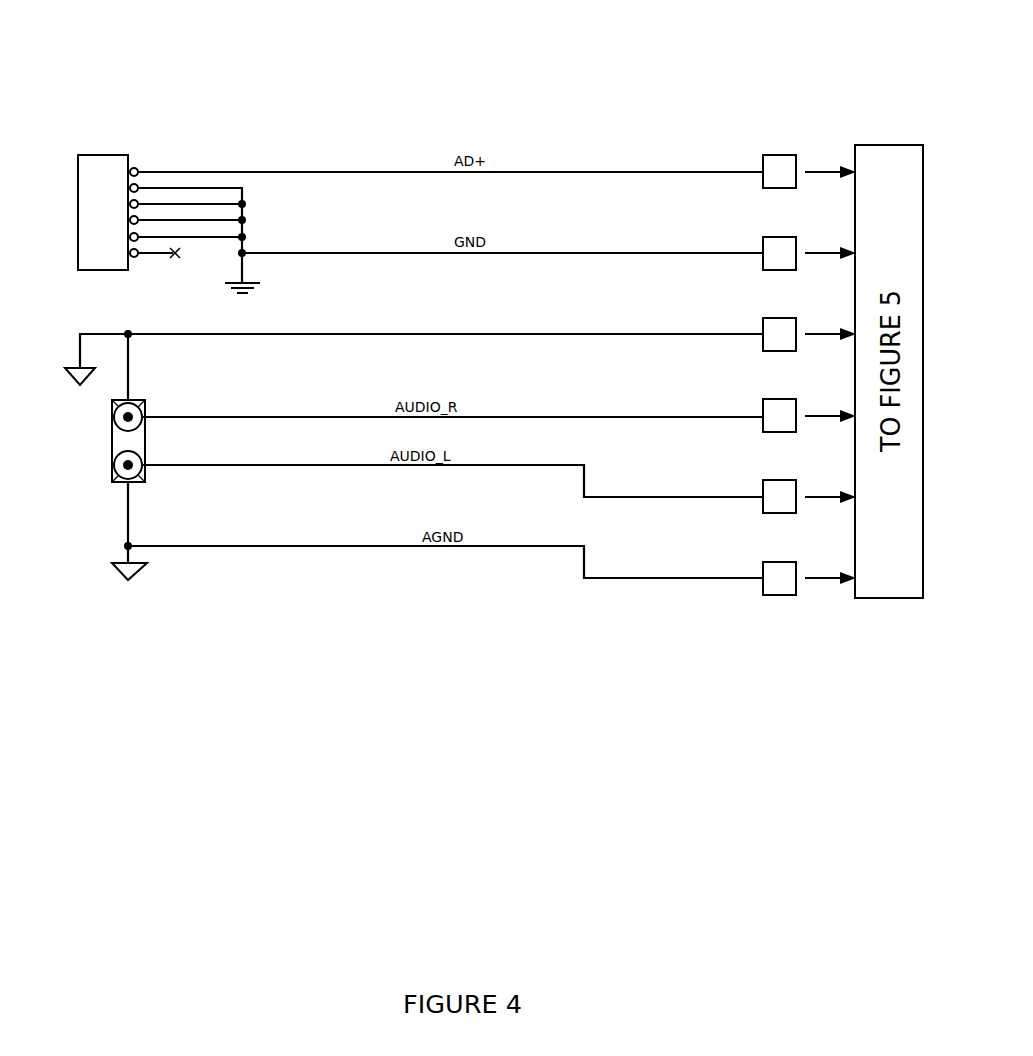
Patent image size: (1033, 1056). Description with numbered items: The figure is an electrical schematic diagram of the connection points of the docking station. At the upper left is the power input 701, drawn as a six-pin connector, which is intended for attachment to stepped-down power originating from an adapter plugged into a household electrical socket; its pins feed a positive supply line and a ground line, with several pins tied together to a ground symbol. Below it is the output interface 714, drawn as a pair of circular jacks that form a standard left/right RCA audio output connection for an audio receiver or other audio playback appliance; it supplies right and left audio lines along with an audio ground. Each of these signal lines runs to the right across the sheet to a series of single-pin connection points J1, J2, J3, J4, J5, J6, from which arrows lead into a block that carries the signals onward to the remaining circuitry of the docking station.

The power input 701 is at (78, 195).
The output interface 714 is at (103, 478).
The connector J1 is at (809, 172).
The connector J2 is at (809, 254).
The connector J3 is at (809, 335).
The connector J4 is at (809, 417).
The connector J5 is at (809, 498).
The connector J6 is at (809, 580).